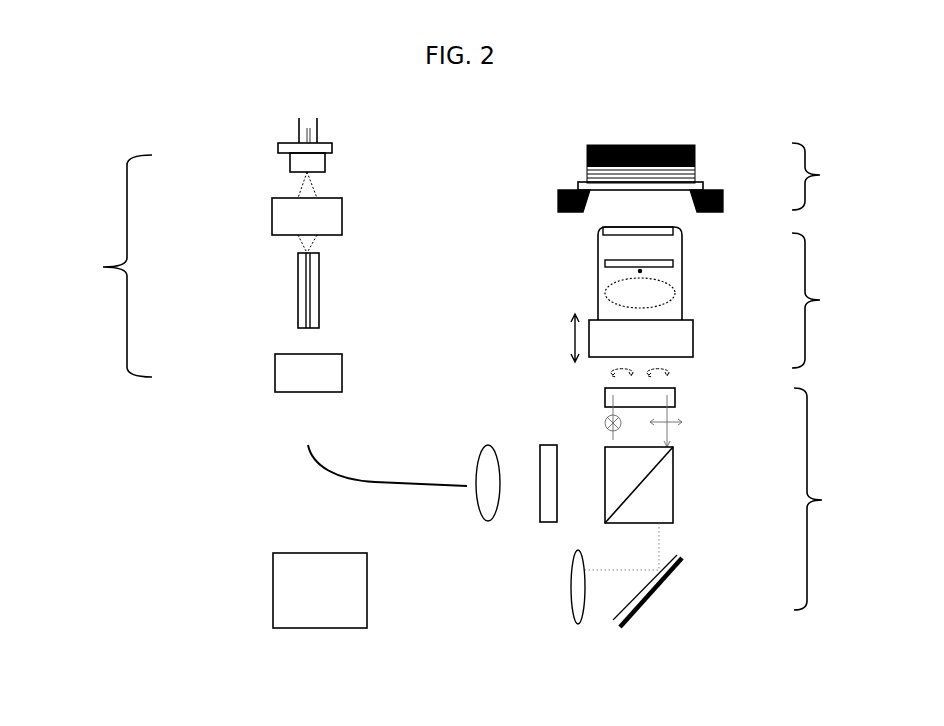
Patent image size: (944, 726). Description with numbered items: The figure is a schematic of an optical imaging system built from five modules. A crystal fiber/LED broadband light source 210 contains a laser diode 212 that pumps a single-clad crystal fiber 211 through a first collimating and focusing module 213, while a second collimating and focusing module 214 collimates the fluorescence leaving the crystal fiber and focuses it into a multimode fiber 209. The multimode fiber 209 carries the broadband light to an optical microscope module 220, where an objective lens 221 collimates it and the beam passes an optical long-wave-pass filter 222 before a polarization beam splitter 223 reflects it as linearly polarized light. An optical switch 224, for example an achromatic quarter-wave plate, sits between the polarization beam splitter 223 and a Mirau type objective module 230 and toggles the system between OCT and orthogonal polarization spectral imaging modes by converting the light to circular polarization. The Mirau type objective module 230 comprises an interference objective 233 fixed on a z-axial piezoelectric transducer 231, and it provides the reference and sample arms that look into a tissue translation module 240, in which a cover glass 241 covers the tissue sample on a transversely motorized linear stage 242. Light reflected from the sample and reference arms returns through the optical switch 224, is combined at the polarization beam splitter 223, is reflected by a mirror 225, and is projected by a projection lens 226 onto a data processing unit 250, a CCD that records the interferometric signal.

The multimode fiber 209 is at (388, 480).
The crystal fiber/LED broadband light source 210 is at (87, 266).
The single-clad crystal fiber 211 is at (298, 290).
The laser diode 212 is at (290, 161).
The first collimating and focusing module 213 is at (272, 216).
The second collimating and focusing module 214 is at (275, 371).
The optical microscope module 220 is at (841, 499).
The objective lens 221 is at (488, 445).
The optical long-wave-pass filter 222 is at (547, 445).
The polarization beam splitter 223 is at (673, 485).
The optical switch 224 is at (675, 400).
The mirror 225 is at (665, 588).
The projection lens 226 is at (579, 625).
The Mirau type objective module 230 is at (840, 300).
The z-axial piezoelectric transducer 231 is at (693, 338).
The interference objective 233 is at (682, 280).
The tissue translation module 240 is at (840, 176).
The cover glass 241 is at (578, 185).
The transversely motorized linear stage 242 is at (557, 200).
The data processing unit 250 is at (320, 590).